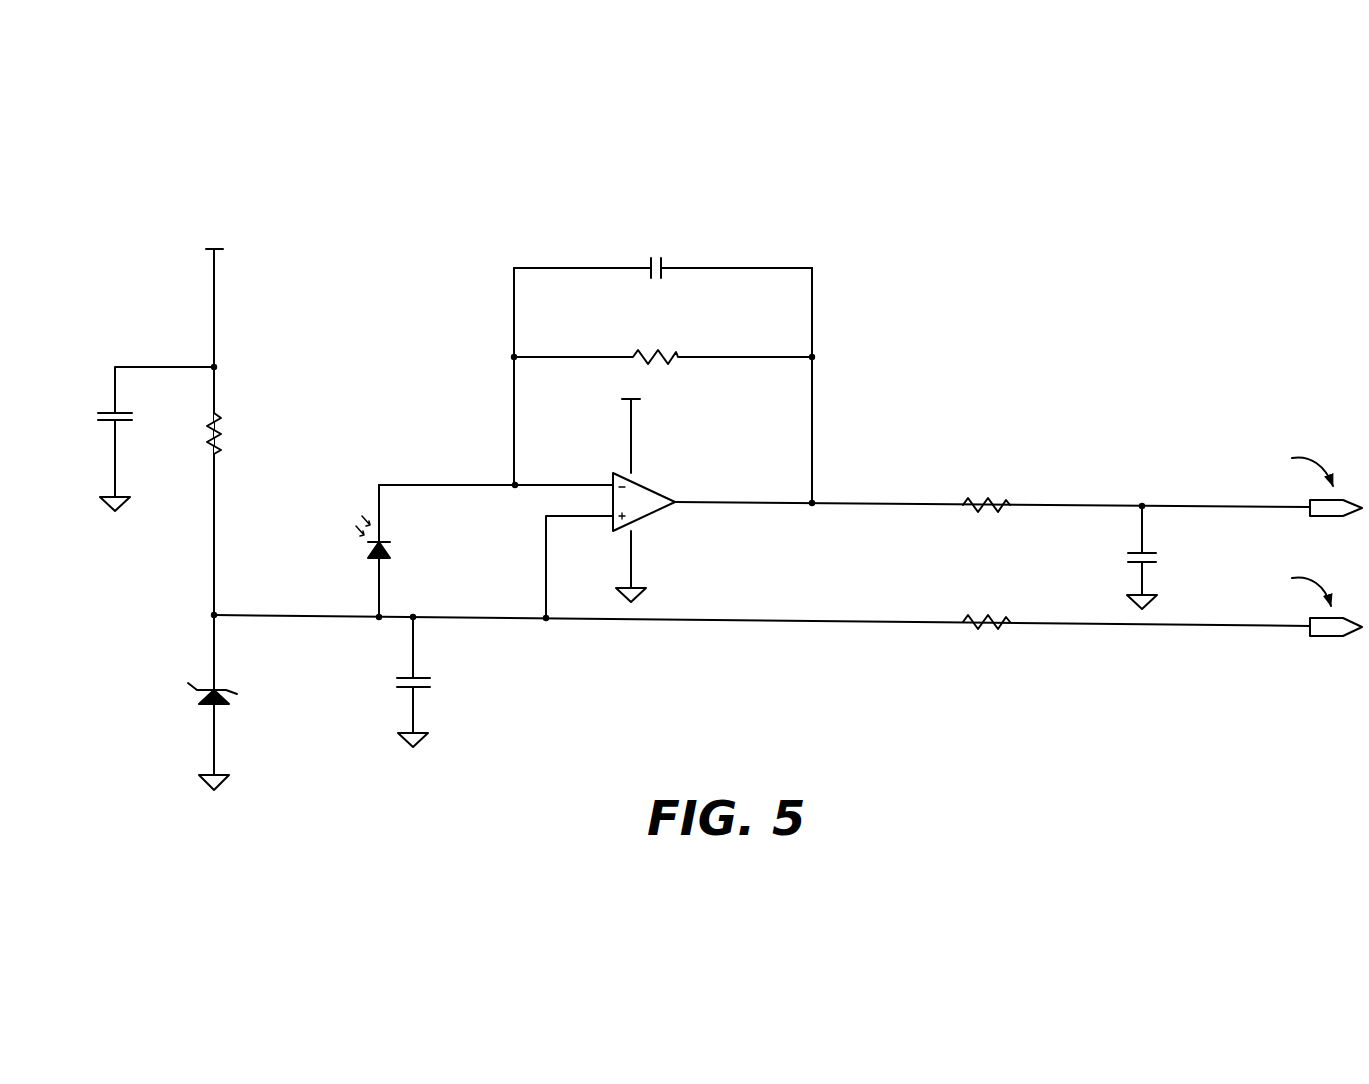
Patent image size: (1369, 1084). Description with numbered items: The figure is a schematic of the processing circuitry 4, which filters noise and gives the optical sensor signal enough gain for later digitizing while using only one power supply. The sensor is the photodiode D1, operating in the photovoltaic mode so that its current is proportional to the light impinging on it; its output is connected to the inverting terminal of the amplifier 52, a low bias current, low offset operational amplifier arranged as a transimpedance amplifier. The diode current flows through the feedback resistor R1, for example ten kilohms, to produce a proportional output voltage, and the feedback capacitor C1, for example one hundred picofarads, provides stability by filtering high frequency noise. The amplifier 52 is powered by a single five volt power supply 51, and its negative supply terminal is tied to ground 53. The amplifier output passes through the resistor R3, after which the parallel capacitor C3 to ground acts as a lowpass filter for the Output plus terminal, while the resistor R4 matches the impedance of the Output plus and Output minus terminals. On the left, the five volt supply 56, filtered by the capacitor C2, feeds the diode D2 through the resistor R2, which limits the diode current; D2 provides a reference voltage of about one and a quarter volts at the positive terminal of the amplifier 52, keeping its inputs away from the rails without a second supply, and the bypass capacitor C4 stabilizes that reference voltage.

The processing circuitry 4 is at (1030, 243).
The 5 volt power supply 51 is at (586, 387).
The amplifier 52 is at (664, 534).
The ground of operational amplifier 53 is at (600, 584).
The +5 volt supply 56 is at (222, 214).
The feedback capacitor C1 is at (648, 294).
The supply capacitor C2 is at (72, 408).
The parallel capacitor C3 is at (1172, 540).
The bypass capacitor C4 is at (436, 658).
The photodiode D1 is at (344, 551).
The diode D2 is at (172, 661).
The feedback resistor R1 is at (670, 330).
The current limiting resistor R2 is at (232, 434).
The output resistor R3 is at (992, 478).
The impedance matching resistor R4 is at (985, 600).